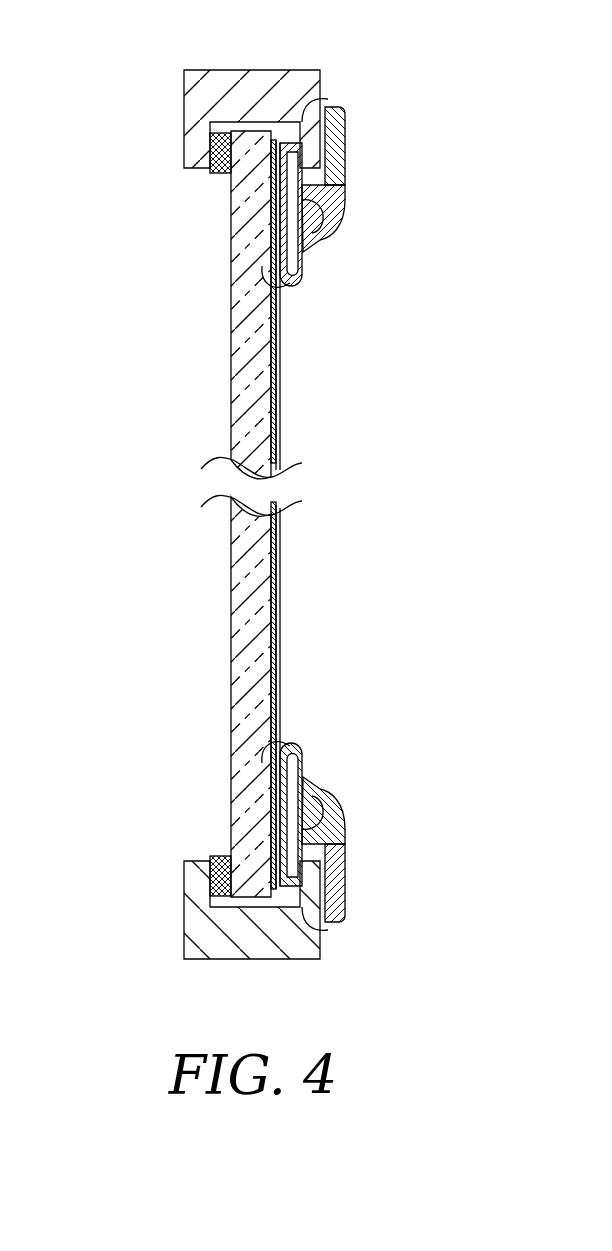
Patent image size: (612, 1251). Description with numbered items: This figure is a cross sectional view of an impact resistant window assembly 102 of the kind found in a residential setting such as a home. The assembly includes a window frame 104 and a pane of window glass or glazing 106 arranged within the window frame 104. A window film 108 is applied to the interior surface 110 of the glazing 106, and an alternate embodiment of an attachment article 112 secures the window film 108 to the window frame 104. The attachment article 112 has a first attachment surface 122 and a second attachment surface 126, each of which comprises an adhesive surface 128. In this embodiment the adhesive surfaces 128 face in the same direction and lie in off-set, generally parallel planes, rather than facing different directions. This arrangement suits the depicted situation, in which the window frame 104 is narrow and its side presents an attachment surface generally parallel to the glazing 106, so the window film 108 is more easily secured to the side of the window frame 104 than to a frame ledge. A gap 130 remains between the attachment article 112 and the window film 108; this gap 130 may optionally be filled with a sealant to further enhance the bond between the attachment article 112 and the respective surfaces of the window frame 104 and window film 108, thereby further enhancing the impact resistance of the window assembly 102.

The impact resistant window assembly 102 is at (112, 190).
The window frame 104 is at (277, 85).
The glazing 106 is at (231, 407).
The window film 108 is at (279, 625).
The interior surface 110 is at (282, 577).
The attachment article 112 is at (313, 217).
The first attachment surface 122 is at (301, 240).
The second attachment surface 126 is at (338, 142).
The adhesive surfaces 128 is at (322, 95).
The gap 130 is at (318, 187).